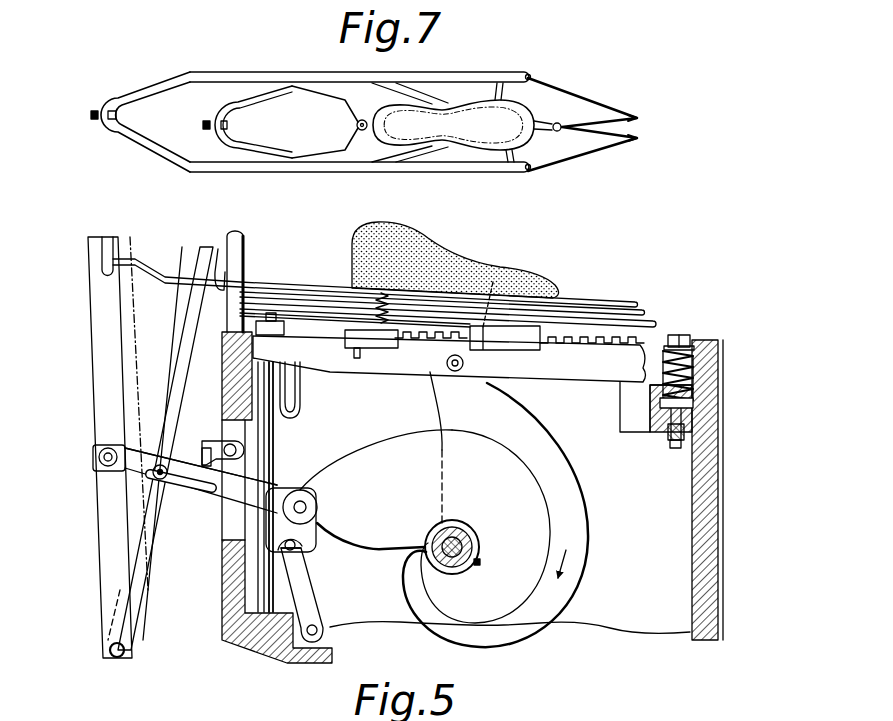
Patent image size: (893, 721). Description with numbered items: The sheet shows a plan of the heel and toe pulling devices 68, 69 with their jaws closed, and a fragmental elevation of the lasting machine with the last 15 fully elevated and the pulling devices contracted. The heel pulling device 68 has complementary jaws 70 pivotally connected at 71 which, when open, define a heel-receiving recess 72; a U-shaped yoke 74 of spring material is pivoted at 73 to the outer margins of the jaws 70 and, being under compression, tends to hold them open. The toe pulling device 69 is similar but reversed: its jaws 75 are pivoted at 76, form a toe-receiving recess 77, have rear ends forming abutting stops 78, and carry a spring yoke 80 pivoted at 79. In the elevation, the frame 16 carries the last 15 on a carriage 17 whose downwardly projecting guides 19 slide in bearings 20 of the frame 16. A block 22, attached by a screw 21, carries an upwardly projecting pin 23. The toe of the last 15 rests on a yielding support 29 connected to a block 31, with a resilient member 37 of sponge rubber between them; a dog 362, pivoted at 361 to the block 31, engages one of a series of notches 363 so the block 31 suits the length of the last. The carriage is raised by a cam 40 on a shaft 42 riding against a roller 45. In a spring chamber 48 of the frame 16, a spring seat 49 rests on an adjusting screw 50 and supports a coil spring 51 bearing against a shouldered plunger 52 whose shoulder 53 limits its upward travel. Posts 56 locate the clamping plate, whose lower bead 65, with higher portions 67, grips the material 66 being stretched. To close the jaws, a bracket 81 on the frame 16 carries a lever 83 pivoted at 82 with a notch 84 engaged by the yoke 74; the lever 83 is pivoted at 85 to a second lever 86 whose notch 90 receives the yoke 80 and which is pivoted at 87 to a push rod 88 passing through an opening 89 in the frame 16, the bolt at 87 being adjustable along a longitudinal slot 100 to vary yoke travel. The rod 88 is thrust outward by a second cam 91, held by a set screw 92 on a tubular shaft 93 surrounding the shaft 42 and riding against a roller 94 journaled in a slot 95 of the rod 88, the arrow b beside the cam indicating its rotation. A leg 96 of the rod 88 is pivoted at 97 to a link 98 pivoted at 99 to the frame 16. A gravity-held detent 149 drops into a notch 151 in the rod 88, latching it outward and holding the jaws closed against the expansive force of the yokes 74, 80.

In FIG. 5, the last 15 is at (548, 283).
In FIG. 5, the frame 16 is at (255, 642).
In FIG. 5, the carriage 17 is at (597, 390).
In FIG. 5, the guides 19 is at (301, 421).
In FIG. 5, the bearings 20 is at (221, 630).
In FIG. 5, the screw 21 is at (357, 362).
In FIG. 5, the block 22 is at (380, 349).
In FIG. 5, the pin 23 is at (432, 340).
In FIG. 5, the yielding support 29 is at (492, 280).
In FIG. 5, the block 31 is at (498, 351).
In FIG. 5, the resilient member 37 is at (553, 347).
In FIG. 5, the cam 40 is at (540, 427).
In FIG. 5, the shaft 42 is at (456, 532).
In FIG. 5, the roller 45 is at (446, 363).
In FIG. 5, the spring chamber 48 is at (704, 344).
In FIG. 5, the spring seat 49 is at (694, 407).
In FIG. 5, the adjusting screw 50 is at (685, 426).
In FIG. 5, the coil spring 51 is at (697, 376).
In FIG. 5, the plunger 52 is at (684, 333).
In FIG. 5, the shoulder 53 is at (671, 333).
In FIG. 5, the post 56 is at (245, 236).
In FIG. 5, the bead 65 is at (340, 324).
In FIG. 5, the material 66 is at (520, 280).
In FIG. 5, the higher bead portions 67 is at (310, 303).
In FIG. 7, the heel pulling device 68 is at (345, 98).
In FIG. 5, the heel pulling device 68 is at (378, 294).
In FIG. 7, the toe pulling device 69 is at (625, 112).
In FIG. 7, the jaws 70 is at (404, 94).
In FIG. 7, the pivot 71 is at (343, 113).
In FIG. 7, the heel-receiving recess 72 is at (382, 125).
In FIG. 7, the pivots 73 is at (376, 80).
In FIG. 7, the yoke 74 is at (292, 153).
In FIG. 5, the yoke 74 is at (284, 291).
In FIG. 7, the jaws 75 is at (497, 98).
In FIG. 7, the pivot 76 is at (562, 121).
In FIG. 7, the toe-receiving recess 77 is at (528, 125).
In FIG. 7, the abutting stops 78 is at (642, 118).
In FIG. 7, the pivots 79 is at (531, 75).
In FIG. 5, the pivots 79 is at (562, 286).
In FIG. 7, the yoke 80 is at (463, 74).
In FIG. 5, the yoke 80 is at (167, 277).
In FIG. 5, the bracket 81 is at (257, 527).
In FIG. 5, the pivot 82 is at (168, 445).
In FIG. 7, the lever 83 is at (208, 122).
In FIG. 5, the lever 83 is at (193, 338).
In FIG. 5, the notch 84 is at (217, 247).
In FIG. 5, the pivot 85 is at (116, 658).
In FIG. 7, the lever 86 is at (91, 113).
In FIG. 5, the lever 86 is at (91, 375).
In FIG. 5, the pivot 87 is at (93, 456).
In FIG. 5, the push rod 88 is at (110, 443).
In FIG. 5, the opening 89 is at (237, 532).
In FIG. 5, the notch 90 is at (100, 240).
In FIG. 5, the cam 91 is at (463, 526).
In FIG. 5, the set screw 92 is at (482, 562).
In FIG. 5, the tubular shaft 93 is at (466, 548).
In FIG. 5, the roller 94 is at (326, 473).
In FIG. 5, the slot 95 is at (306, 490).
In FIG. 5, the leg 96 is at (297, 548).
In FIG. 5, the pivot 97 is at (305, 560).
In FIG. 5, the link 98 is at (325, 600).
In FIG. 5, the pivot 99 is at (312, 640).
In FIG. 5, the longitudinal slot 100 is at (100, 465).
In FIG. 5, the detent 149 is at (222, 440).
In FIG. 5, the notch 151 is at (163, 479).
In FIG. 5, the pivot 361 is at (470, 364).
In FIG. 5, the dog 362 is at (505, 338).
In FIG. 5, the notches 363 is at (598, 347).
In FIG. 5, the direction of rotation b is at (565, 552).